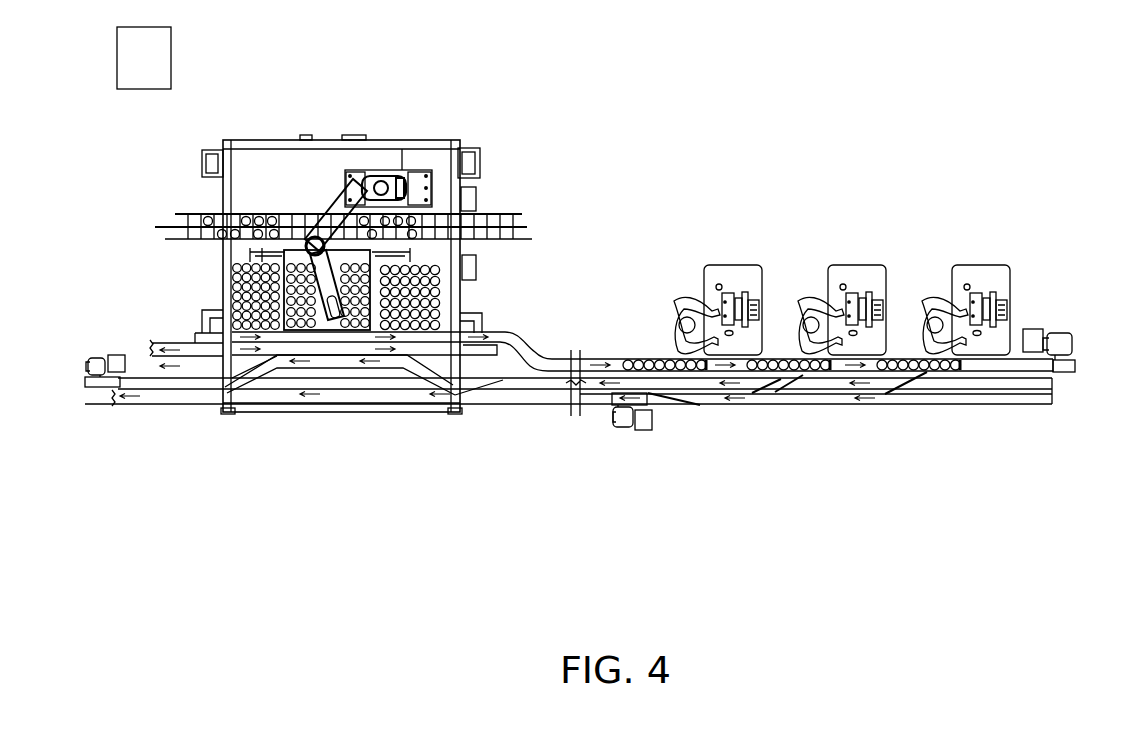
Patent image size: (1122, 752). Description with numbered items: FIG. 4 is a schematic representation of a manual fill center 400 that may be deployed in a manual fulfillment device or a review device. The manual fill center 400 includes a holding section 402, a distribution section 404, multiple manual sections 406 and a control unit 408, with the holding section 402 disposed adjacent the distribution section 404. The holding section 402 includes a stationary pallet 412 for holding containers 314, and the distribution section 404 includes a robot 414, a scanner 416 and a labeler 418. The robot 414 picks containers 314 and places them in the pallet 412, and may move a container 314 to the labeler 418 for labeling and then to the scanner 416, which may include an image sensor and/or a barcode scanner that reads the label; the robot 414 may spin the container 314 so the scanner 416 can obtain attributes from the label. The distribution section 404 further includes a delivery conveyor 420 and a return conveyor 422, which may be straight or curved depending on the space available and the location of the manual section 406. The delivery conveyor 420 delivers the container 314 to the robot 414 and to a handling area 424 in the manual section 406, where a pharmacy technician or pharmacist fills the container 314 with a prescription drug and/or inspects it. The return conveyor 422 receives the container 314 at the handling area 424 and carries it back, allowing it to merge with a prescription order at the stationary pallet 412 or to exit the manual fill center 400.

The manual fill center 400 is at (998, 132).
The holding section 402 is at (222, 205).
The distribution section 404 is at (430, 152).
The manual section 406 is at (702, 235).
The control unit 408 is at (151, 58).
The stationary pallet 412 is at (430, 265).
The robot 414 is at (331, 179).
The scanner 416 is at (477, 198).
The labeler 418 is at (477, 268).
The container 314 is at (441, 297).
The delivery conveyor 420 is at (165, 343).
The return conveyor 422 is at (505, 383).
The handling area 424 is at (984, 272).